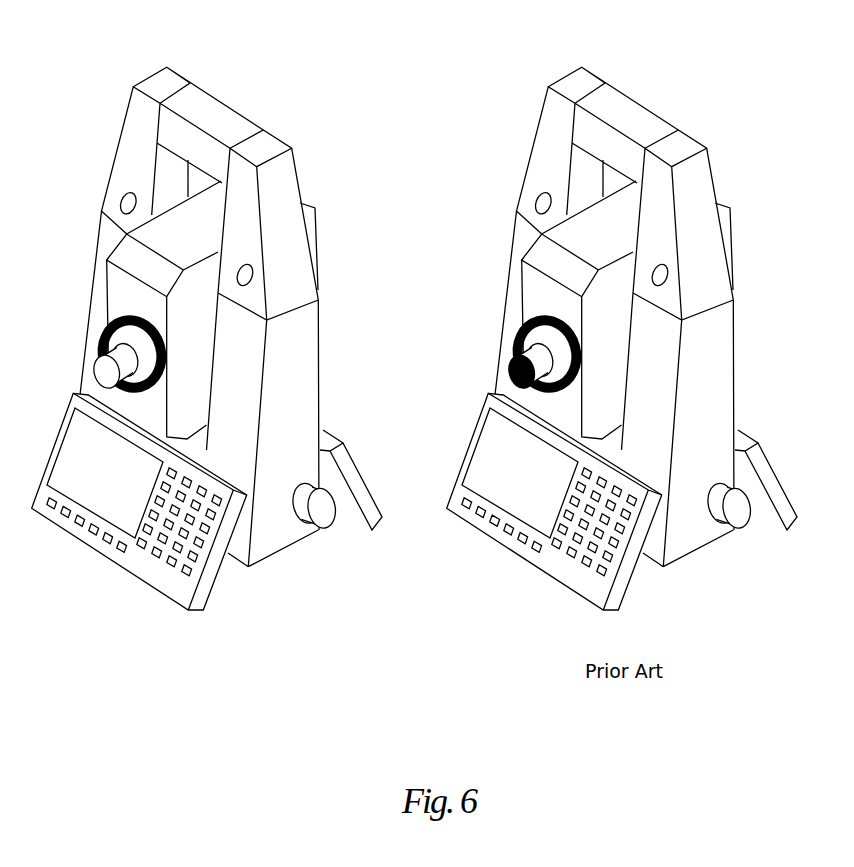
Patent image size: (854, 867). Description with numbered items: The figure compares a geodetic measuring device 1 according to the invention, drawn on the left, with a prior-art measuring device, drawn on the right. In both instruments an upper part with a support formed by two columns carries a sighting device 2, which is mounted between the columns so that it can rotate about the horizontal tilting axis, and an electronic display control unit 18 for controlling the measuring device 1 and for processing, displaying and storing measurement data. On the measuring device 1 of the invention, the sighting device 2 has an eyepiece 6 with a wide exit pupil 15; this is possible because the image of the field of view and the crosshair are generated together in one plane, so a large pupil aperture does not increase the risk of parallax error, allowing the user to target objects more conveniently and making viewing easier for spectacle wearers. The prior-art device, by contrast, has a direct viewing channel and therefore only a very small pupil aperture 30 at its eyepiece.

The geodetic measuring device 1 is at (206, 323).
The sighting device 2 is at (150, 230).
The eyepiece 6 is at (113, 353).
The exit pupil 15 is at (90, 348).
The display control unit 18 is at (155, 570).
The pupil aperture 30 is at (489, 369).